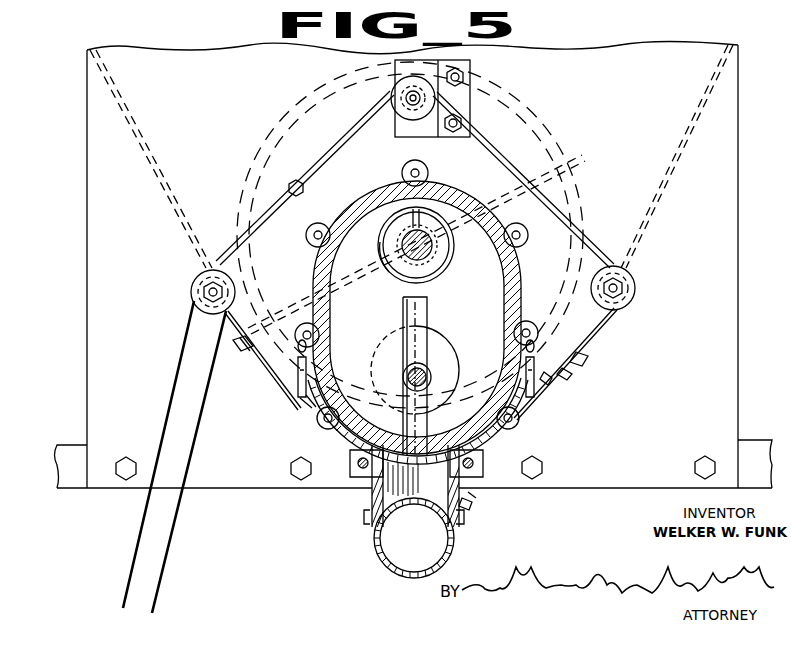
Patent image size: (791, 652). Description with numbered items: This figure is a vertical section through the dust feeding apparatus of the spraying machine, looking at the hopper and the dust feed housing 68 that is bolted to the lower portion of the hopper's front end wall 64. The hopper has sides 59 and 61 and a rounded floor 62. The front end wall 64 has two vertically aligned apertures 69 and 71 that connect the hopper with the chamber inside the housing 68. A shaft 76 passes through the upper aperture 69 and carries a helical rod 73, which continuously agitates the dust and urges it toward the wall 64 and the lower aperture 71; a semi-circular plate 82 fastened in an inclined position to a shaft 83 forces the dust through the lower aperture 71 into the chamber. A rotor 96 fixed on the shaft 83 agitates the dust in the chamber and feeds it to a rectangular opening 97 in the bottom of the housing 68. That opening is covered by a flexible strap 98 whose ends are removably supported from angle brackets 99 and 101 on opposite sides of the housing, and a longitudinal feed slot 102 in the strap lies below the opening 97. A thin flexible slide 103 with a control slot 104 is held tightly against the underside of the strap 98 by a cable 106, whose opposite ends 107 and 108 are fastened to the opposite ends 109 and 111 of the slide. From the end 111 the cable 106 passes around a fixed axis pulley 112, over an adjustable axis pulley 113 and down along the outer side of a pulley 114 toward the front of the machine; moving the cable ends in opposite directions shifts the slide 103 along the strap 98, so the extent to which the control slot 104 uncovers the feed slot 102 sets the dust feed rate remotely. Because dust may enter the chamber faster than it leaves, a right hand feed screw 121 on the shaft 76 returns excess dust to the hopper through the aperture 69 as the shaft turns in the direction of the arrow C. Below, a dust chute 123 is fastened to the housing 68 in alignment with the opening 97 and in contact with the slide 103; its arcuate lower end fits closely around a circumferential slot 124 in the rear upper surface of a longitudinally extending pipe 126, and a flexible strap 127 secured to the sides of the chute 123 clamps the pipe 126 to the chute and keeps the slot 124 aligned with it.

The hopper side 59 is at (143, 140).
The hopper side 61 is at (705, 88).
The front end wall 64 is at (258, 115).
The helical rod 73 is at (547, 130).
The cable 106 is at (335, 155).
The adjustable axis pulley 113 is at (420, 117).
The pulley 114 is at (194, 287).
The fixed axis pulley 112 is at (634, 280).
The cable end 107 is at (258, 366).
The slide end 109 is at (262, 377).
The angle bracket 99 is at (293, 387).
The slide 103 is at (300, 403).
The cable end 108 is at (592, 352).
The slide end 111 is at (567, 373).
The angle bracket 101 is at (547, 379).
The flexible strap 98 is at (525, 407).
The dust feed housing 68 is at (510, 268).
The shaft 76 is at (433, 257).
The right hand feed screw 121 is at (438, 252).
The aperture 69 is at (387, 273).
The arrow C is at (366, 240).
The rotor 96 is at (428, 307).
The semi-circular plate 82 is at (393, 353).
The shaft 83 is at (430, 370).
The aperture 71 is at (456, 392).
The rectangular opening 97 is at (428, 415).
The feed slot 102 is at (404, 458).
The rounded floor 62 is at (498, 449).
The control slot 104 is at (412, 470).
The circumferential slot 124 is at (440, 503).
The pipe 126 is at (378, 537).
The dust chute 123 is at (375, 502).
The flexible strap 127 is at (460, 542).